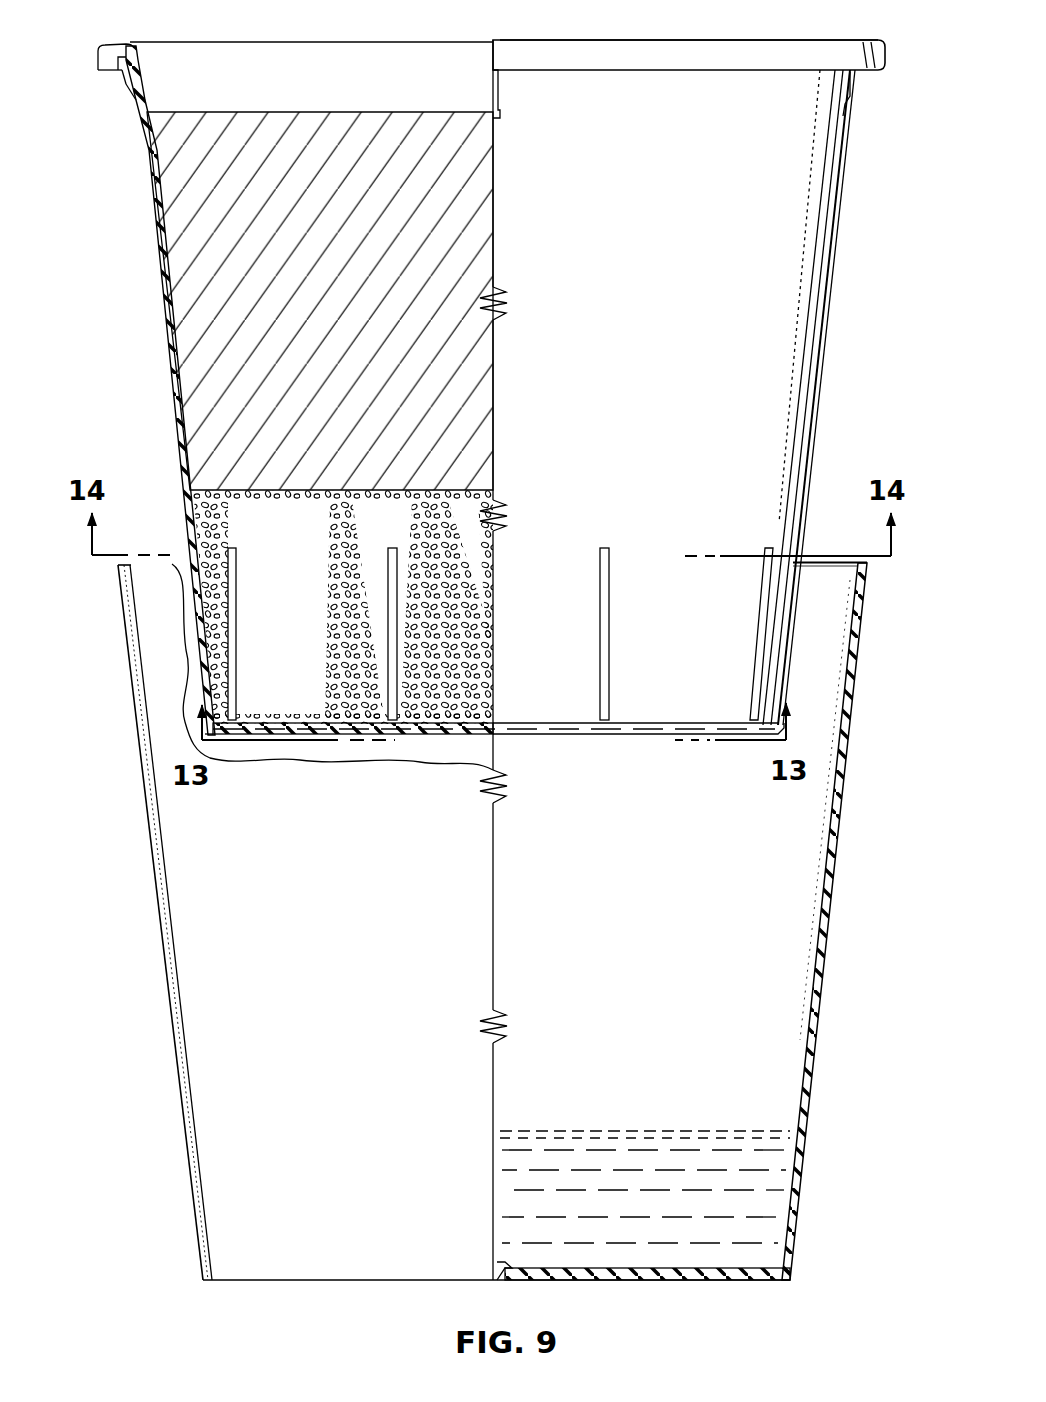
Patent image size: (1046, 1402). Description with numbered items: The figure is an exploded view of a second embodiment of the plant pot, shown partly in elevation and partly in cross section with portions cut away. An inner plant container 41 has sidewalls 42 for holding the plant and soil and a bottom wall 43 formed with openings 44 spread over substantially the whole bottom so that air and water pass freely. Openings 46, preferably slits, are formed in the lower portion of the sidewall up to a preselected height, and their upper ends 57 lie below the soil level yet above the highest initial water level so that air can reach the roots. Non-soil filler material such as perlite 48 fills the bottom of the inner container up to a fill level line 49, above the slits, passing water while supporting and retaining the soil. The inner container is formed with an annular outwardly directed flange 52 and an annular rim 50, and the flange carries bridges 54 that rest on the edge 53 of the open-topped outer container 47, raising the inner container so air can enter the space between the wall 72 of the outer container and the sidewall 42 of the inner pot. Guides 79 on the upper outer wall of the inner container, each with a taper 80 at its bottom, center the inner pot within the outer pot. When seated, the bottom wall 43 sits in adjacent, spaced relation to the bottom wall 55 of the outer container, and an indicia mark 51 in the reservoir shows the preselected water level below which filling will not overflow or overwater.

The plant container 41 is at (840, 225).
The sidewalls 42 is at (160, 294).
The bottom wall 43 is at (292, 726).
The openings 44 is at (432, 730).
The openings 46 is at (393, 598).
The outer container 47 is at (150, 823).
The perlite 48 is at (445, 578).
The fill level line 49 is at (460, 490).
The annular rim 50 is at (887, 64).
The indicia mark 51 is at (795, 1133).
The flange 52 is at (877, 42).
The edge 53 is at (868, 568).
The bridges 54 is at (117, 70).
The bottom wall 55 is at (672, 1268).
The upper ends 57 is at (232, 548).
The wall 72 is at (852, 818).
The guides 79 is at (126, 95).
The taper 80 is at (134, 104).